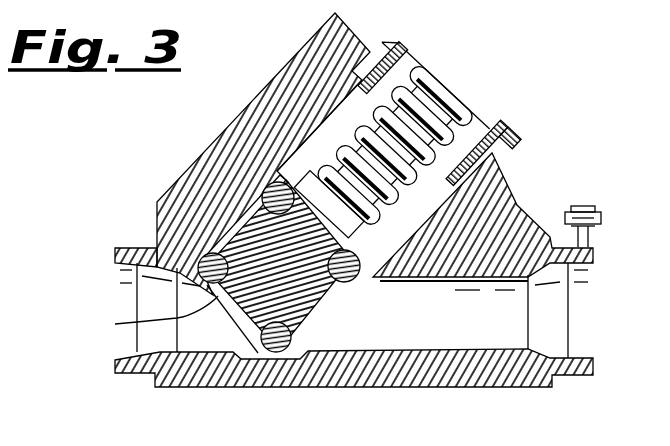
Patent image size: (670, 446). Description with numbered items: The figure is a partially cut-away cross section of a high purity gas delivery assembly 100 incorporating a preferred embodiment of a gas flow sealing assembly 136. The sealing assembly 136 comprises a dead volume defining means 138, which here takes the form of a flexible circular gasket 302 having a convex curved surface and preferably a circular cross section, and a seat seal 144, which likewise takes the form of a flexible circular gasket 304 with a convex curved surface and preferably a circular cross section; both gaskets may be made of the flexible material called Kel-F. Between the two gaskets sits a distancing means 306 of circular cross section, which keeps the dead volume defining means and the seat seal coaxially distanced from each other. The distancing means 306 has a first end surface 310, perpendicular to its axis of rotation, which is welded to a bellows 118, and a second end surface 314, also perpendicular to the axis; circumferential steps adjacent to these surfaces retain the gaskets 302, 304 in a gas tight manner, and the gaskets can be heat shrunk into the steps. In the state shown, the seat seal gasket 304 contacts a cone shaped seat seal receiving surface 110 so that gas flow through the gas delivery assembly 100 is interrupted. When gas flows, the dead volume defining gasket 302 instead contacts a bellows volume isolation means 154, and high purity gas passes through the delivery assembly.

The gas delivery assembly 100 is at (518, 151).
The cone shaped seat seal receiving surface 110 is at (157, 233).
The bellows 118 is at (444, 93).
The gas flow sealing assembly 136 is at (205, 152).
The dead volume defining means 138 is at (265, 183).
The seat seal 144 is at (212, 268).
The bellows volume isolation means 154 is at (496, 158).
The flexible circular gasket 302 is at (353, 284).
The flexible circular gasket 304 is at (286, 362).
The distancing means 306 is at (115, 324).
The first end surface 310 is at (300, 140).
The second end surface 314 is at (237, 324).